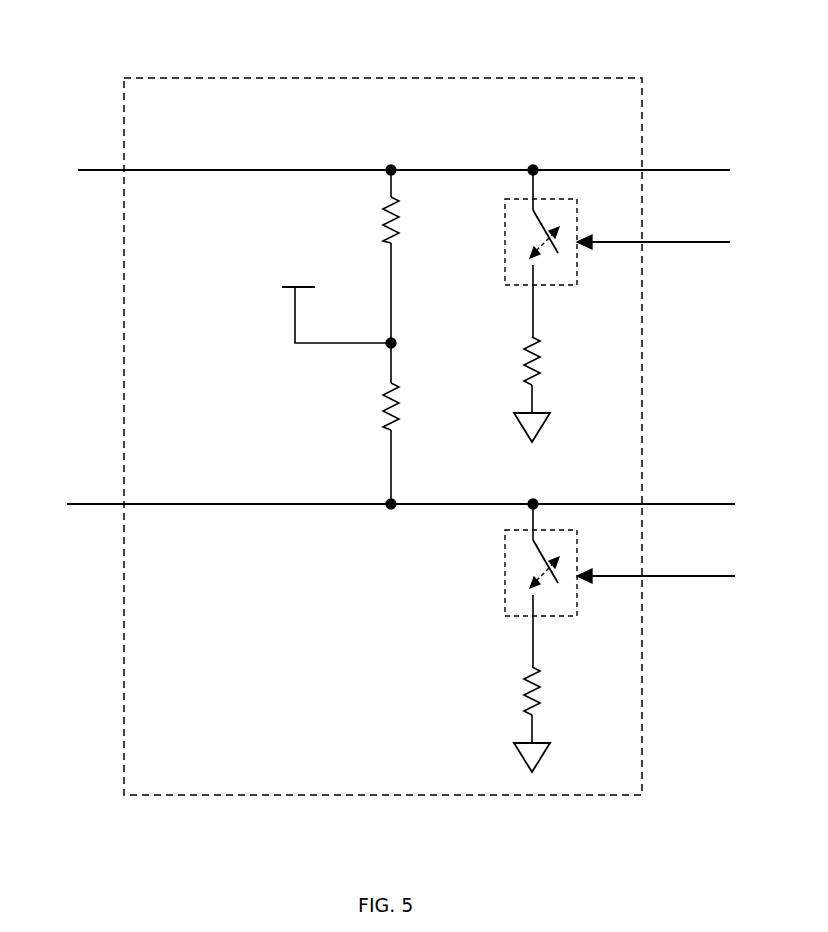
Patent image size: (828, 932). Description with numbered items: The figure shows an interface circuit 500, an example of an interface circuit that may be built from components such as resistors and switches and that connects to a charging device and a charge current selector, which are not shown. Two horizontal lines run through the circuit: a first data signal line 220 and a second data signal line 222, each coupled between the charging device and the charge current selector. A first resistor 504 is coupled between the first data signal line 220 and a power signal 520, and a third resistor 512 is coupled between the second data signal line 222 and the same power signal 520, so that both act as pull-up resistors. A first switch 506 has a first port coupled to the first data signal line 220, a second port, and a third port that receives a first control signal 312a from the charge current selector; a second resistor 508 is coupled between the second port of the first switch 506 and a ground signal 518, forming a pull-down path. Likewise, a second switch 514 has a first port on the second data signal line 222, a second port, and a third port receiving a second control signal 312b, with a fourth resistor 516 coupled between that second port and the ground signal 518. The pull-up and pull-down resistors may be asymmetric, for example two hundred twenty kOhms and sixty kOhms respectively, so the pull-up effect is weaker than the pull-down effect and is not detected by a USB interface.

The interface circuit 500 is at (277, 78).
The first data signal line 220 is at (107, 170).
The second data signal line 222 is at (105, 504).
The first resistor 504 is at (402, 222).
The third resistor 512 is at (402, 408).
The power signal 520 is at (283, 288).
The first switch 506 is at (566, 285).
The second switch 514 is at (559, 616).
The second resistor 508 is at (542, 362).
The fourth resistor 516 is at (542, 692).
The ground signal 518 is at (540, 430).
The first control signal 312a is at (688, 242).
The second control signal 312b is at (688, 576).